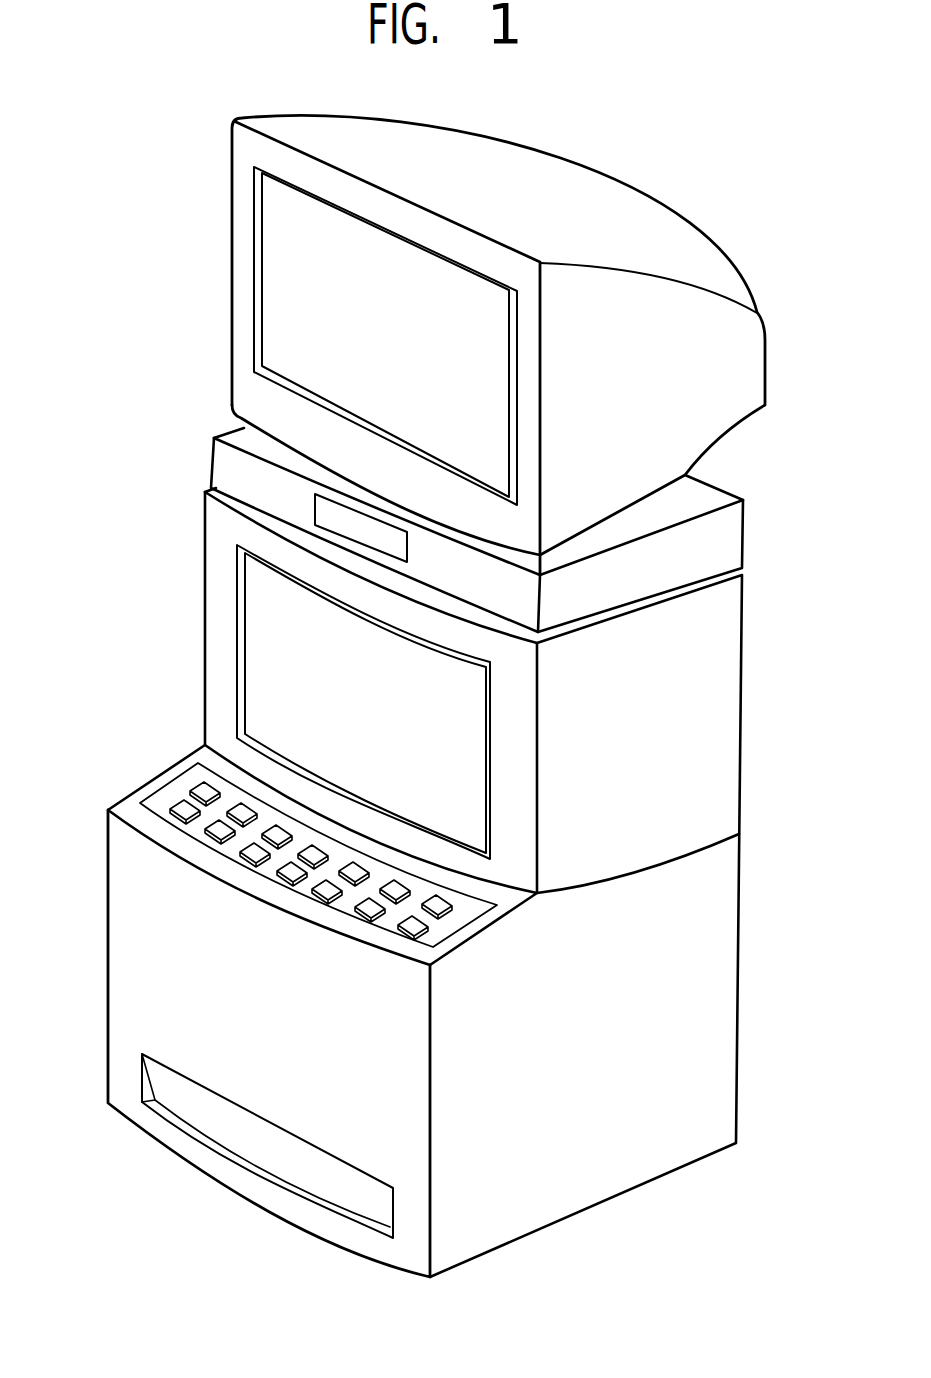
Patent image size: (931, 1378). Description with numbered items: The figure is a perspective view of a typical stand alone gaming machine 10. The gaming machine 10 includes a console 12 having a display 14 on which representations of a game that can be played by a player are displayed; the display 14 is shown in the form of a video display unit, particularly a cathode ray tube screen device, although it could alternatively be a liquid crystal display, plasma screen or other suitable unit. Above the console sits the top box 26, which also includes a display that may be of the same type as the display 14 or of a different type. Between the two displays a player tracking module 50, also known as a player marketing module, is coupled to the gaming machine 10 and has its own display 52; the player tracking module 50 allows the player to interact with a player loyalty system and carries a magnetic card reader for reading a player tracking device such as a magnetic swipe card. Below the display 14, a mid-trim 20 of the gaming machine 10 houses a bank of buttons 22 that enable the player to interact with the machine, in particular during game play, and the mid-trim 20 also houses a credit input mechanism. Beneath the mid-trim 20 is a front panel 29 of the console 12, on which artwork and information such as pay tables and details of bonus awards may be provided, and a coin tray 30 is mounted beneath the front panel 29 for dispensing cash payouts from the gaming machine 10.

The gaming machine 10 is at (734, 187).
The console 12 is at (742, 712).
The display 14 is at (257, 618).
The mid-trim 20 is at (160, 788).
The bank of buttons 22 is at (205, 836).
The top box 26 is at (229, 233).
The front panel 29 is at (130, 1020).
The coin tray 30 is at (175, 1093).
The player tracking module 50 is at (742, 529).
The display 52 is at (323, 514).